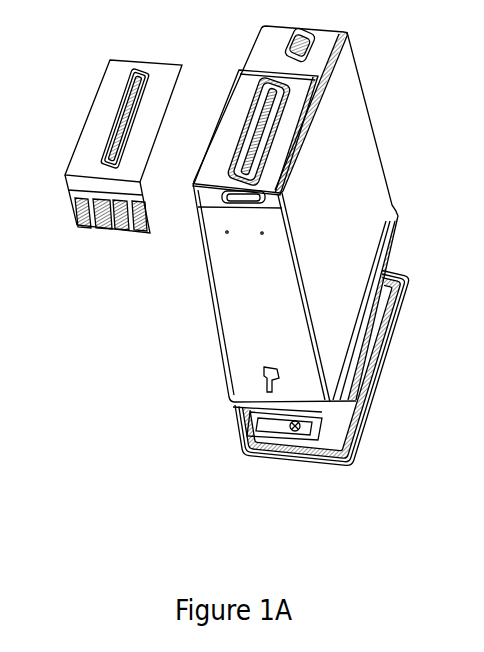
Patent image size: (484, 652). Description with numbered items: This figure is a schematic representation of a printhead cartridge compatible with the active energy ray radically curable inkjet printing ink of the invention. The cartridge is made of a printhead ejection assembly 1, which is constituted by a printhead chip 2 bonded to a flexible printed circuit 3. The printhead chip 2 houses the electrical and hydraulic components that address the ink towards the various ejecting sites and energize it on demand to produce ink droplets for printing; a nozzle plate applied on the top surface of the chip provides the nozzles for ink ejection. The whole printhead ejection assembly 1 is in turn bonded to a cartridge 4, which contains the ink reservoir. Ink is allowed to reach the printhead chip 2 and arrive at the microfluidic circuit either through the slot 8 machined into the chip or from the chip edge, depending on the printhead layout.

The printhead ejection assembly 1 is at (70, 186).
The printhead chip 2 is at (105, 130).
The flexible printed circuit 3 is at (72, 214).
The cartridge 4 is at (377, 123).
The slot 8 is at (140, 70).